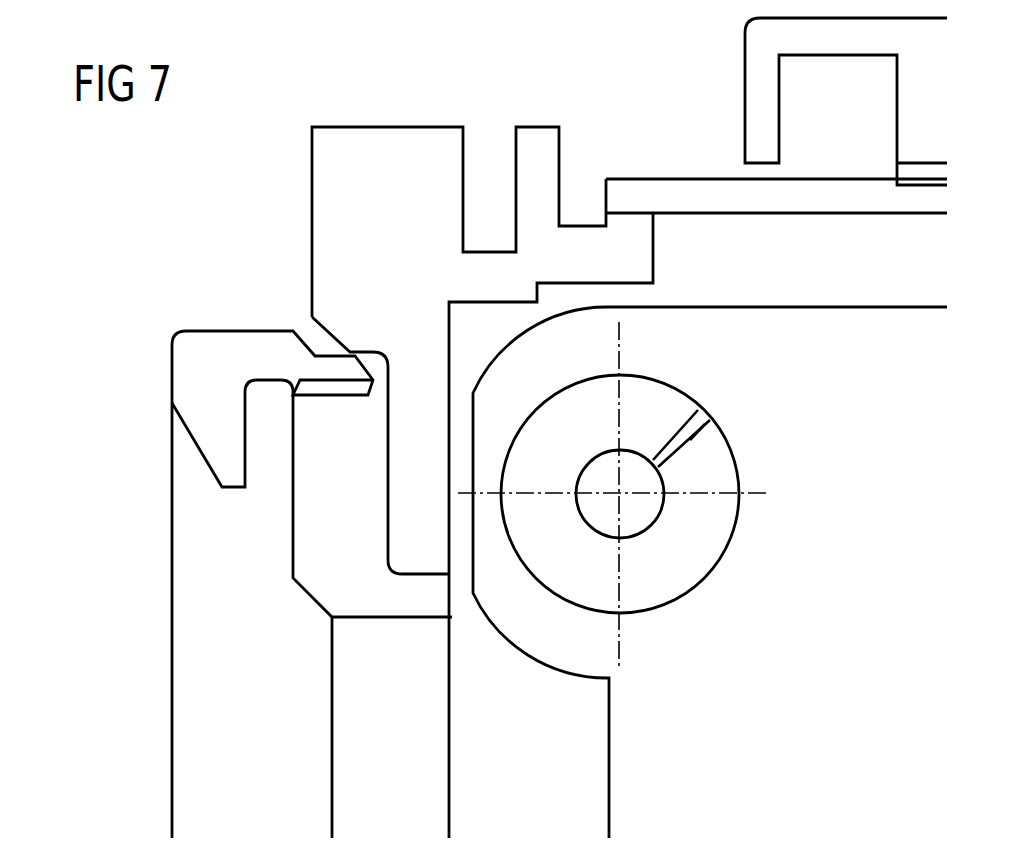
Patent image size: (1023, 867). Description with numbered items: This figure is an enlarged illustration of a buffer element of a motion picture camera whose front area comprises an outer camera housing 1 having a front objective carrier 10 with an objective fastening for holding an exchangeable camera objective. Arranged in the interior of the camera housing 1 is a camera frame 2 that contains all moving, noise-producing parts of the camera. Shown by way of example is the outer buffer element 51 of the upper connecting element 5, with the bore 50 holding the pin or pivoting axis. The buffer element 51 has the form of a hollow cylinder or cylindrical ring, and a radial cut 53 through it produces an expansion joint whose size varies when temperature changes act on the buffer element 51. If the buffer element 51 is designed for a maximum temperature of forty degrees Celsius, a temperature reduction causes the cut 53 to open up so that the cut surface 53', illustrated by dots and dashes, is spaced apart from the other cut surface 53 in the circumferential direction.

The camera housing 1 is at (337, 203).
The camera frame 2 is at (838, 320).
The upper connecting element 5 is at (636, 138).
The front objective carrier 10 is at (290, 692).
The bore 50 is at (638, 510).
The outer buffer element 51 is at (647, 592).
The radial cut 53 is at (738, 421).
The cut surface 53' is at (763, 452).